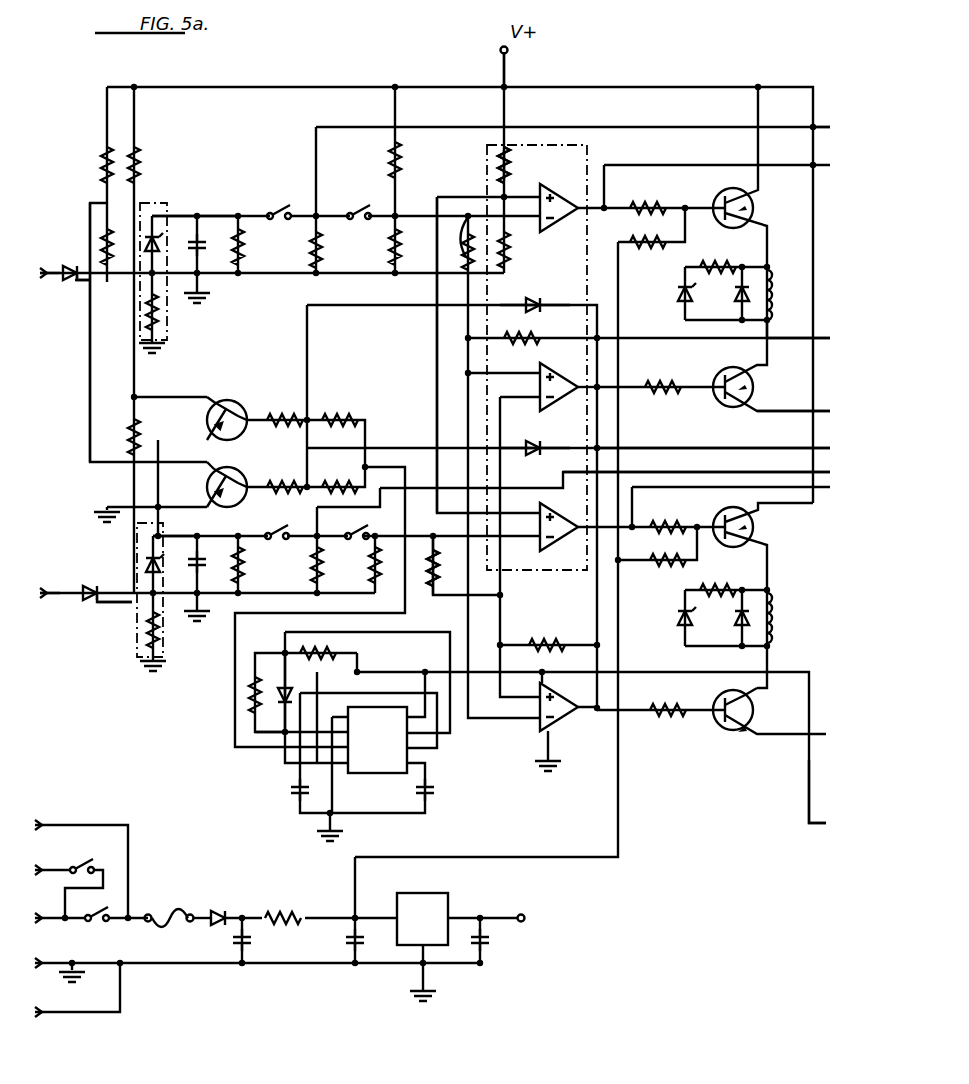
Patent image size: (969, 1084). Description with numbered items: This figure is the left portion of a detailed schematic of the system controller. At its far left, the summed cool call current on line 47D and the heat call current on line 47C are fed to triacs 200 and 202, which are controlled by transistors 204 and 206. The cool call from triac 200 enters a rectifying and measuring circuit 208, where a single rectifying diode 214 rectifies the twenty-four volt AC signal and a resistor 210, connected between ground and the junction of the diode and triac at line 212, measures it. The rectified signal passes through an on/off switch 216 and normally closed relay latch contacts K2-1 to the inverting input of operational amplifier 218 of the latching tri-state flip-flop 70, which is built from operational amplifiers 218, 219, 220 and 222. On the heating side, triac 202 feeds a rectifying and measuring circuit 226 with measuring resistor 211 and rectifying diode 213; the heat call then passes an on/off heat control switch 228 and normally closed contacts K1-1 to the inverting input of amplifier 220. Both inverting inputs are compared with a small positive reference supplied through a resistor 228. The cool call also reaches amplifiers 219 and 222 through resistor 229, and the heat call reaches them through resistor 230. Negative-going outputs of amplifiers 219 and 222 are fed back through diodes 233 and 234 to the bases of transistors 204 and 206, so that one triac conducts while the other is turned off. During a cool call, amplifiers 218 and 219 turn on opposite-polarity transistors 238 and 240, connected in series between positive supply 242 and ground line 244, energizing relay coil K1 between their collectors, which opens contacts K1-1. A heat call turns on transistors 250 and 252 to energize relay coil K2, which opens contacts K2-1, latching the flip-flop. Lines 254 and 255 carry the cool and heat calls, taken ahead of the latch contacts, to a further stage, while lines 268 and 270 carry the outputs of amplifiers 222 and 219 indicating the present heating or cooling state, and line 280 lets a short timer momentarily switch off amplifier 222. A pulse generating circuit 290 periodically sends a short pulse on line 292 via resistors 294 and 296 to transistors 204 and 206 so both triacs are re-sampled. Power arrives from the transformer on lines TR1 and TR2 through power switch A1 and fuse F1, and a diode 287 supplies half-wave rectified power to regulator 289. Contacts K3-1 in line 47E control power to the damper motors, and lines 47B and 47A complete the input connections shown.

The positive voltage supply 242 is at (507, 77).
The line 254 is at (818, 125).
The latching tri-state flip-flop 70 is at (587, 145).
The on/off heat control switch / resistor 228 is at (500, 162).
The resistor 229 is at (455, 190).
The operational amplifier 218 is at (560, 183).
The transistor 238 is at (706, 190).
The relay coil K1 is at (772, 270).
The line 270 is at (830, 323).
The diode 233 is at (536, 300).
The operational amplifier 219 is at (556, 364).
The transistor 240 is at (712, 370).
The ground line 244 is at (792, 393).
The diode 234 is at (536, 443).
The line 268 is at (782, 445).
The line 255 is at (782, 469).
The operational amplifier 220 is at (548, 548).
The transistor 250 is at (712, 510).
The relay coil K2 is at (775, 620).
The operational amplifier 222 is at (558, 680).
The transistor 252 is at (728, 728).
The line 280 is at (815, 826).
The line 47D is at (60, 260).
The triac 200 is at (70, 295).
The line 212 is at (112, 288).
The rectifying and measuring circuit 208 is at (160, 203).
The rectifying diode 214 is at (170, 212).
The on/off switch 216 is at (282, 205).
The relay latch contacts K2-1 is at (362, 206).
The resistor 210 is at (156, 325).
The transistor 204 is at (237, 398).
The resistor 294 is at (345, 412).
The transistor 206 is at (237, 465).
The resistor 296 is at (344, 465).
The line 47C is at (72, 580).
The triac 202 is at (92, 610).
The rectifying and measuring circuit 226 is at (160, 523).
The rectifying diode 213 is at (160, 562).
The measuring resistor 211 is at (158, 638).
The relay latch contacts K1-1 is at (358, 526).
The resistor 230 is at (433, 578).
The line 292 is at (235, 685).
The pulse generating circuit 290 is at (360, 773).
The input terminal 47B is at (92, 805).
The line 47E is at (62, 860).
The damper motor power relay contacts K3-1 is at (80, 858).
The line TR1 is at (45, 922).
The power switch A1 is at (96, 925).
The fuse F1 is at (175, 905).
The diode 287 is at (222, 905).
The regulator 289 is at (420, 893).
The line TR2 is at (45, 968).
The input terminal 47A is at (55, 1015).